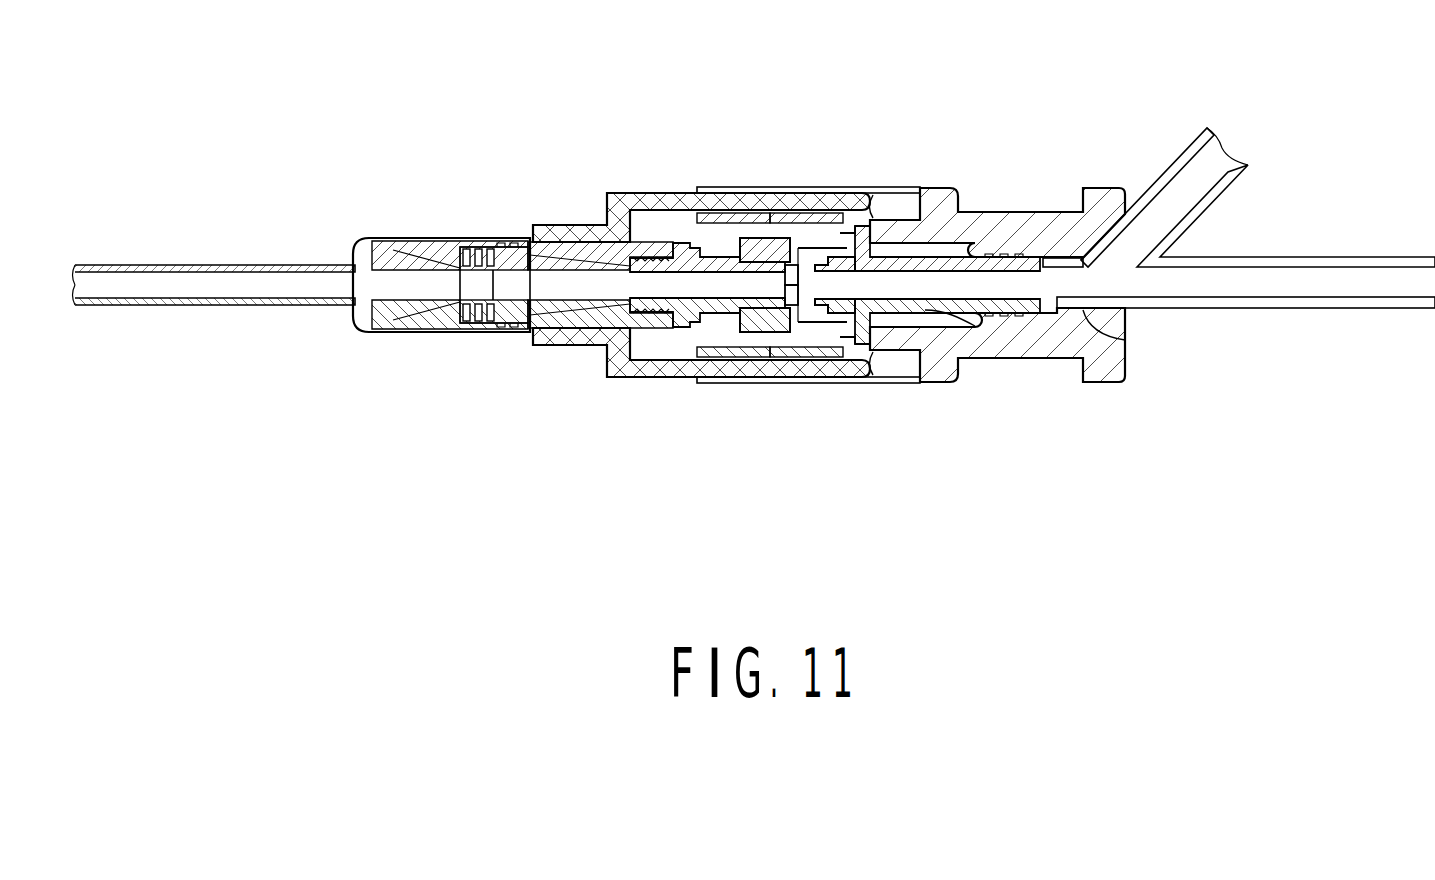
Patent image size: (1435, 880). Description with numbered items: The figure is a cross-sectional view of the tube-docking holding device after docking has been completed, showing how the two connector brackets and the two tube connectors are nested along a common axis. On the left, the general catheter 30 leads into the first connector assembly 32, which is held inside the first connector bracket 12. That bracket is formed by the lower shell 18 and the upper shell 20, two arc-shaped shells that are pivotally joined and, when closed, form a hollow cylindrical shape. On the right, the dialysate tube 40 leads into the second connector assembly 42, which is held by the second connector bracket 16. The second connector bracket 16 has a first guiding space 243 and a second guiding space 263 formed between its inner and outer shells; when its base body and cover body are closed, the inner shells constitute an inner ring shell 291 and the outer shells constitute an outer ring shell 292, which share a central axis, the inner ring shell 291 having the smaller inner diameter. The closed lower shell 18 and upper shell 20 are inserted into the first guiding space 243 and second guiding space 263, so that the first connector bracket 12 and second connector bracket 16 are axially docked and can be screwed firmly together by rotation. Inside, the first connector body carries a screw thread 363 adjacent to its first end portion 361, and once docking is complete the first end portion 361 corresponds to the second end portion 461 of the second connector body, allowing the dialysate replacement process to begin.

The first connector bracket 12 is at (572, 226).
The second connector bracket 16 is at (1005, 212).
The lower shell 18 is at (648, 380).
The upper shell 20 is at (648, 188).
The catheter 30 is at (282, 265).
The first connector assembly 32 is at (392, 247).
The dialysate tube 40 is at (1318, 257).
The second connector assembly 42 is at (935, 310).
The first guiding space 243 is at (888, 185).
The second guiding space 263 is at (888, 384).
The inner ring shell 291 is at (710, 187).
The outer ring shell 292 is at (800, 187).
The first end portion 361 is at (802, 248).
The screw thread 363 is at (757, 334).
The second end portion 461 is at (824, 322).